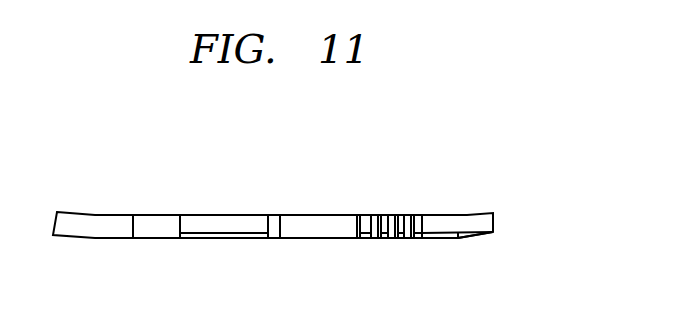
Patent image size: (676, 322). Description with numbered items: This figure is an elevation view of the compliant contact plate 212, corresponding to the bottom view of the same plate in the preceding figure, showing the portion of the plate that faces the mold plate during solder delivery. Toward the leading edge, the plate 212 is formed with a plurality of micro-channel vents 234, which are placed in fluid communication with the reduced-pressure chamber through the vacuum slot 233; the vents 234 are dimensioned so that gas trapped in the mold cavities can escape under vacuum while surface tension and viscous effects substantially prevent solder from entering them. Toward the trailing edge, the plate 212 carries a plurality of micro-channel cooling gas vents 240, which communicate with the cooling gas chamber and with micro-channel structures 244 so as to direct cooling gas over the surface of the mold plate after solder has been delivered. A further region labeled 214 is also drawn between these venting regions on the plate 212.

The compliant contact plate 212 is at (468, 214).
The vacuum slot 233 is at (164, 214).
The micro-channel vents 234 is at (212, 238).
The contact region 214 is at (278, 214).
The micro-channel cooling gas vents 240 is at (381, 214).
The micro-channel structures 244 is at (459, 239).